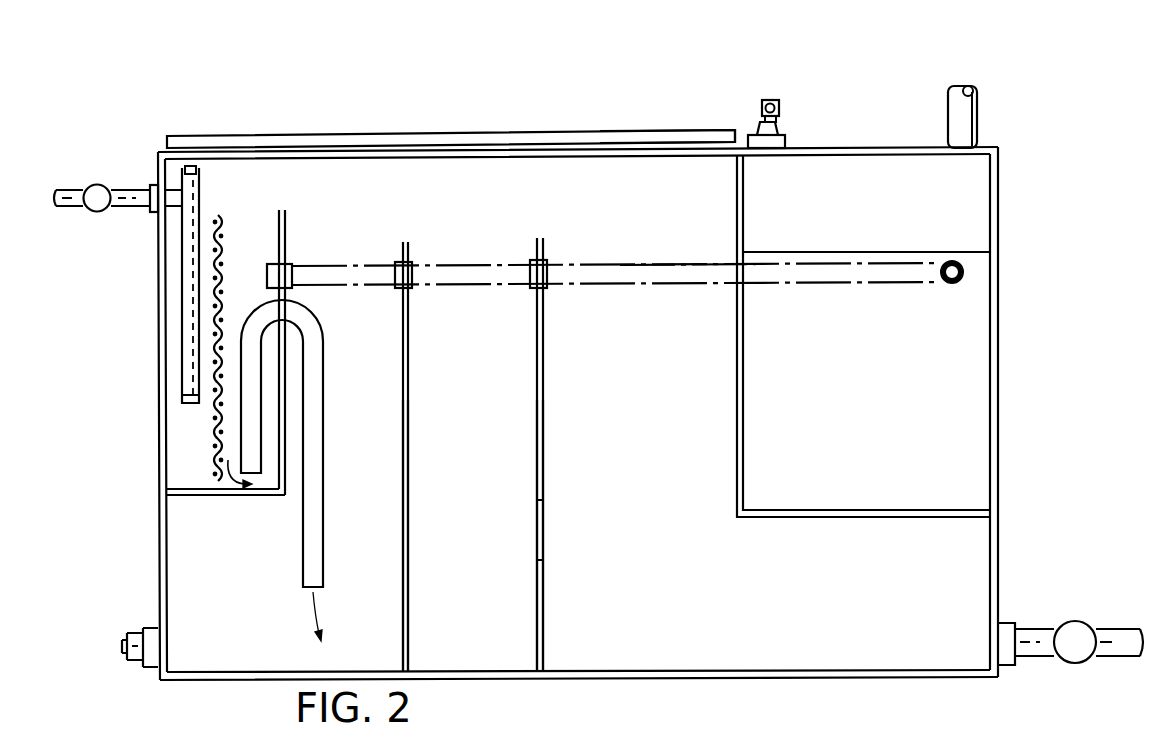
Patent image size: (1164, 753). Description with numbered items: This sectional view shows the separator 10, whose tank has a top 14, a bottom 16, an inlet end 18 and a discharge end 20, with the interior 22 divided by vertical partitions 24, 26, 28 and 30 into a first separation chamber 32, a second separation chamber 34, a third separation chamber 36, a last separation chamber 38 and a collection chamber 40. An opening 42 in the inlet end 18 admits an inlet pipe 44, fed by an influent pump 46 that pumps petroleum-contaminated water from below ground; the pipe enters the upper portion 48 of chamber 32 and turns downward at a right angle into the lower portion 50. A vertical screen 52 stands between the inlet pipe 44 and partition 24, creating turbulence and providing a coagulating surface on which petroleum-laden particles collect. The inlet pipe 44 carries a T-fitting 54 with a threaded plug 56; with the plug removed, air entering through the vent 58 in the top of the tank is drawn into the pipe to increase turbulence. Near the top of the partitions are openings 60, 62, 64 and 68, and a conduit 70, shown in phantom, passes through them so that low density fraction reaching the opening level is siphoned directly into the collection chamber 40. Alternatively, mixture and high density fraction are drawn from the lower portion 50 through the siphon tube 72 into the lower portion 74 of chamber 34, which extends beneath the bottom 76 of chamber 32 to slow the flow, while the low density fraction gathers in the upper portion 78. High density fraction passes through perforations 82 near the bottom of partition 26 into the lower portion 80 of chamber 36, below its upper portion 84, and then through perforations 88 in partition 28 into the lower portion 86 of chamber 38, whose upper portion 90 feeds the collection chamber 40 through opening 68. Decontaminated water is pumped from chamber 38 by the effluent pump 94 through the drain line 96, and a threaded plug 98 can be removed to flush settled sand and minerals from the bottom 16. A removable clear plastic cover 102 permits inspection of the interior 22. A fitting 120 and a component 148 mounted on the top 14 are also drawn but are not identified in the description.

The separator 10 is at (674, 88).
The top 14 is at (880, 147).
The bottom 16 is at (622, 674).
The inlet end 18 is at (160, 370).
The discharge end 20 is at (998, 232).
The interior 22 is at (300, 168).
The vertical partition 24 is at (292, 198).
The vertical partition 26 is at (404, 243).
The vertical partition 28 is at (537, 238).
The vertical partition 30 is at (797, 250).
The first separation chamber 32 is at (170, 305).
The second separation chamber 34 is at (405, 472).
The third separation chamber 36 is at (522, 474).
The last separation chamber 38 is at (557, 528).
The collection chamber 40 is at (970, 318).
The opening 42 is at (153, 188).
The inlet pipe 44 is at (140, 205).
The influent pump 46 is at (95, 185).
The upper portion of first separation chamber 48 is at (257, 278).
The lower portion of first separation chamber 50 is at (190, 410).
The vertical screen 52 is at (221, 256).
The T-fitting 54 is at (202, 200).
The threaded plug 56 is at (200, 172).
The vent 58 is at (978, 122).
The opening 60 is at (290, 268).
The opening 62 is at (411, 270).
The opening 64 is at (546, 268).
The opening 68 is at (962, 258).
The conduit 70 is at (712, 262).
The siphon tube 72 is at (325, 380).
The lower portion of second separation chamber 74 is at (375, 633).
The bottom of first separation chamber 76 is at (222, 500).
The upper portion of second separation chamber 78 is at (368, 315).
The lower portion of third separation chamber 80 is at (482, 632).
The perforations 82 is at (410, 606).
The upper portion of third separation chamber 84 is at (490, 315).
The lower portion of last separation chamber 86 is at (702, 632).
The perforations 88 is at (545, 606).
The upper portion of last separation chamber 90 is at (655, 315).
The effluent pump 94 is at (1068, 623).
The drain line 96 is at (1112, 628).
The threaded plug 98 is at (140, 626).
The clear plastic cover 102 is at (576, 106).
The fitting 120 is at (790, 142).
The sensor 148 is at (778, 108).